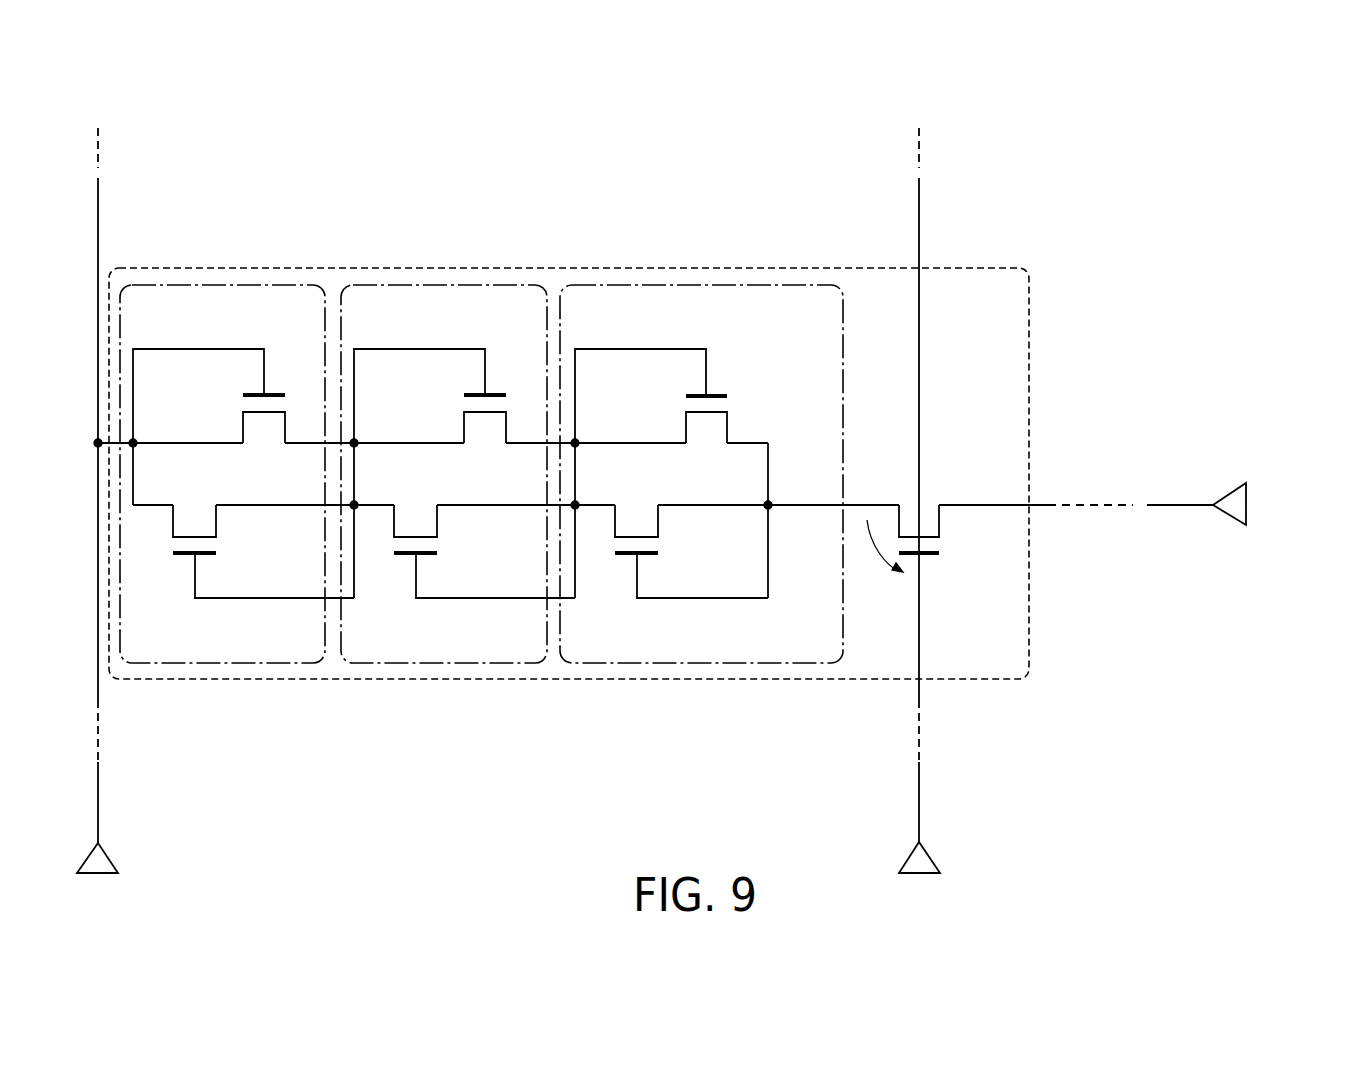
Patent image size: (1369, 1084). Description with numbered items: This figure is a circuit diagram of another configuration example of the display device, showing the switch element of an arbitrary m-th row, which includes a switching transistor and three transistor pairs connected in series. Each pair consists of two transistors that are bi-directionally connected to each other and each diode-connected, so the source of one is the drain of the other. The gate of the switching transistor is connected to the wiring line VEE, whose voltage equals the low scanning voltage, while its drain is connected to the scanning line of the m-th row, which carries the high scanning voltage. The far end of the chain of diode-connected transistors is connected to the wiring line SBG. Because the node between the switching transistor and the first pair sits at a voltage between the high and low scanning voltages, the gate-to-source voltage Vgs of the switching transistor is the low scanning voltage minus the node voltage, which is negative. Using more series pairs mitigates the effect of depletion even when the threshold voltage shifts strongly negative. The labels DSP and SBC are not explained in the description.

The display panel DSP is at (968, 150).
The substrate SBC is at (1085, 152).
The wiring line SBG is at (98, 798).
The wiring line VEE is at (919, 798).
The gate-to-source voltage Vgs is at (880, 573).